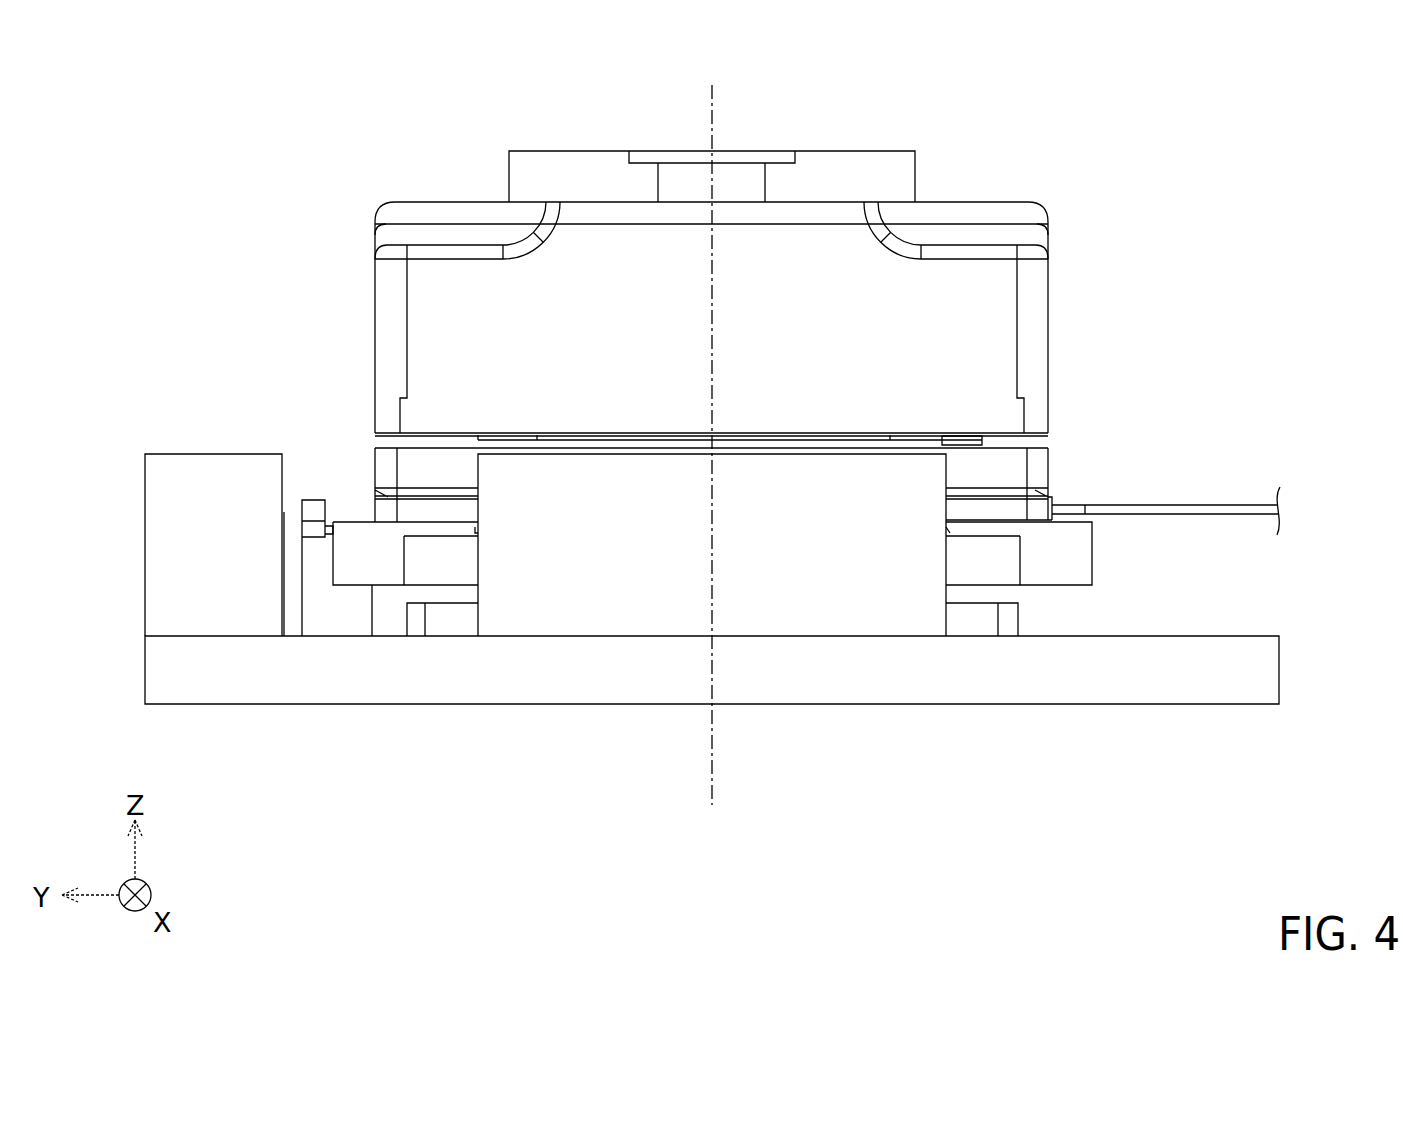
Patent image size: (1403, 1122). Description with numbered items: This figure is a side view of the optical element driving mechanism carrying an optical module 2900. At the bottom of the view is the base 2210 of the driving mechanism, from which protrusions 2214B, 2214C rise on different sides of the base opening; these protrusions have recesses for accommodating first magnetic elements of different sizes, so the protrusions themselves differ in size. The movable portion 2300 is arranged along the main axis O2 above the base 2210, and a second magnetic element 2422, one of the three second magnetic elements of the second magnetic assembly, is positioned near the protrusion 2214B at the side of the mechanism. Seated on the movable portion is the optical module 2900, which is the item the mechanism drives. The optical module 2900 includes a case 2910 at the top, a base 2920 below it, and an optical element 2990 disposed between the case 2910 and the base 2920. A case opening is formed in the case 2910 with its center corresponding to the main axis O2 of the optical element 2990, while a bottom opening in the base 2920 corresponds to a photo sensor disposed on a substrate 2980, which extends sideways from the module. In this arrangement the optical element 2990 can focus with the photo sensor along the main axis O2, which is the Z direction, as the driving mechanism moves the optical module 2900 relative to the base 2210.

The base 2210 is at (1115, 680).
The protrusion 2214B is at (211, 510).
The protrusion 2214C is at (828, 530).
The movable portion 2300 is at (1065, 555).
The second magnetic element 2422 is at (314, 510).
The optical module 2900 is at (903, 147).
The case 2910 is at (595, 300).
The base 2920 is at (1005, 466).
The substrate 2980 is at (1220, 508).
The optical element 2990 is at (828, 178).
The main axis O2 is at (711, 428).